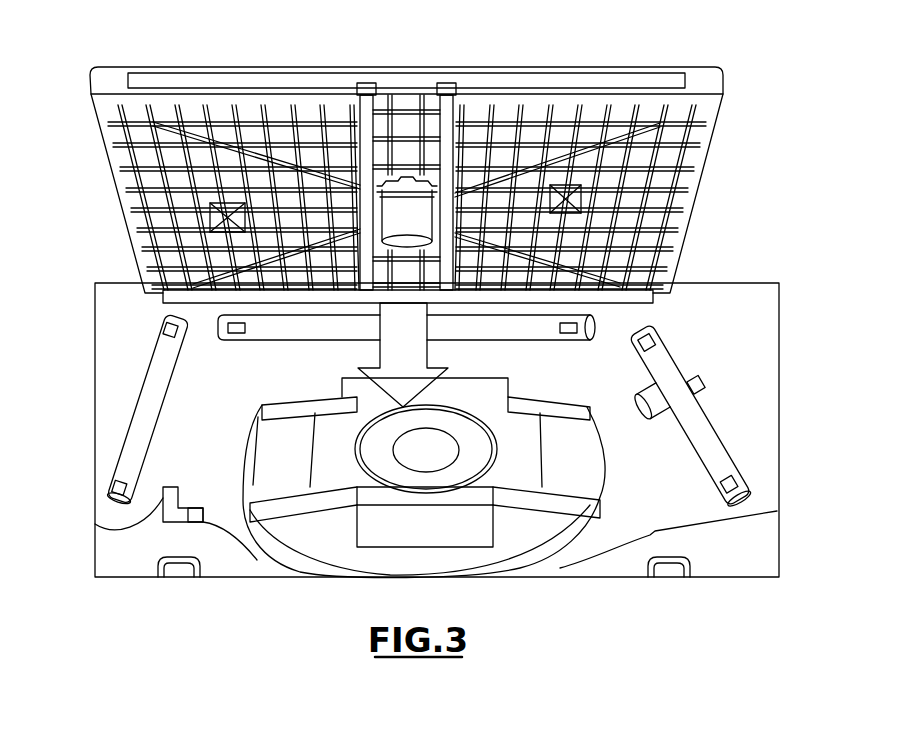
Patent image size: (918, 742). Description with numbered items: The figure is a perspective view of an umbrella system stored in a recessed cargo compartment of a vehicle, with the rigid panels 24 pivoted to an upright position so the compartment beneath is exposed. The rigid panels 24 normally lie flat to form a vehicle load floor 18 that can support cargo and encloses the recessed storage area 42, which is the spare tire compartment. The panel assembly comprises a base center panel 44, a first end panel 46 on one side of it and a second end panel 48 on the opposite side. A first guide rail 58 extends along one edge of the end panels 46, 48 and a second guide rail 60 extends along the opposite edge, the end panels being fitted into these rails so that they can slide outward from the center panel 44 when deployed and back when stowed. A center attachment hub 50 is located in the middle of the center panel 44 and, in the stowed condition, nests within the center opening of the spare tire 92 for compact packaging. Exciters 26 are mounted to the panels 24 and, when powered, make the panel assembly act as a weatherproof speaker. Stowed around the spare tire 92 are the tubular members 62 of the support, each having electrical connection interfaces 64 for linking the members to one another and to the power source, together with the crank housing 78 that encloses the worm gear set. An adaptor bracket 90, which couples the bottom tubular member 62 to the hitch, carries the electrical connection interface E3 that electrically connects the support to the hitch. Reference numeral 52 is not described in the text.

The rigid panel 24 is at (236, 52).
The vehicle load floor 18 is at (297, 67).
The exciter 26 is at (215, 203).
The support post 52 is at (373, 88).
The center panel 44 is at (407, 123).
The center attachment hub 50 is at (420, 213).
The first guide rail 58 is at (667, 82).
The second end panel 48 is at (667, 182).
The first end panel 46 is at (132, 200).
The second guide rail 60 is at (615, 320).
The crank housing 78 is at (713, 372).
The electrical connection interface 64 is at (237, 335).
The tubular member 62 is at (130, 442).
The spare tire 92 is at (553, 557).
The recessed storage area 42 is at (257, 572).
The adaptor bracket 90 is at (172, 522).
The electrical connection interface E3 is at (198, 522).